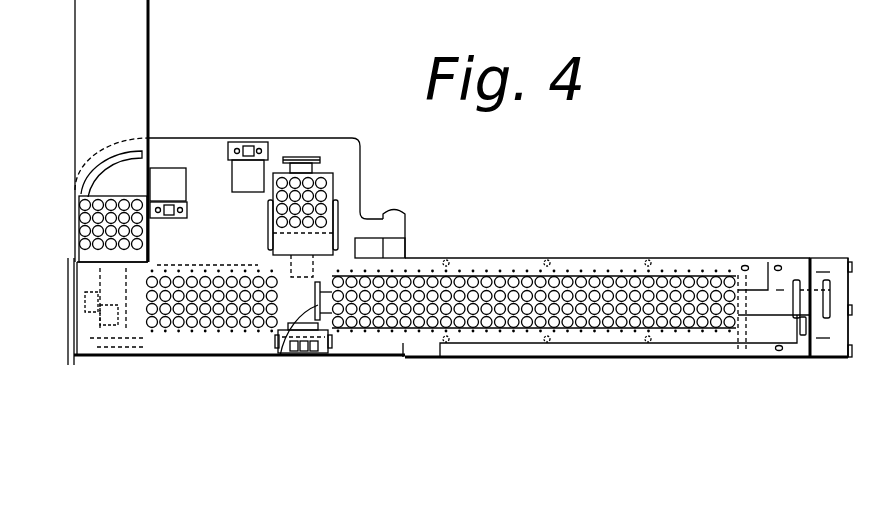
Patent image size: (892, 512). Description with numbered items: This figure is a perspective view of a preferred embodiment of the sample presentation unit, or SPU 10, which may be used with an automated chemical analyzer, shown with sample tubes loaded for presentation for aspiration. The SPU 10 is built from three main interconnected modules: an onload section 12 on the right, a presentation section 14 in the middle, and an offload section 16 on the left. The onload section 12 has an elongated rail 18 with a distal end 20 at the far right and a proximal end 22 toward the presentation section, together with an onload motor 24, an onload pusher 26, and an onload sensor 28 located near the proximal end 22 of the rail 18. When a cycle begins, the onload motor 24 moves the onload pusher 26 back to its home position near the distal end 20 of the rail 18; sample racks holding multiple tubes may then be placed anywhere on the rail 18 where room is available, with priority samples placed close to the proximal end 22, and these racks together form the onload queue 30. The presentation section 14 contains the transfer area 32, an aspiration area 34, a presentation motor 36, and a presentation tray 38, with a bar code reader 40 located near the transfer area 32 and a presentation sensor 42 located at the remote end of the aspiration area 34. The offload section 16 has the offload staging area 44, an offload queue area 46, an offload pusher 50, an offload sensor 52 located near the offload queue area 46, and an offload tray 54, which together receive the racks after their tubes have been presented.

The SPU 10 is at (625, 183).
The onload section 12 is at (588, 486).
The presentation section 14 is at (281, 486).
The offload section 16 is at (103, 486).
The elongated rail 18 is at (565, 258).
The distal end 20 is at (795, 262).
The proximal end 22 is at (480, 258).
The onload motor 24 is at (823, 335).
The onload pusher 26 is at (748, 318).
The onload sensor 28 is at (668, 273).
The onload queue 30 is at (606, 281).
The transfer area 32 is at (284, 358).
The aspiration area 34 is at (333, 147).
The presentation motor 36 is at (328, 341).
The presentation tray 38 is at (335, 229).
The bar code reader 40 is at (405, 219).
The presentation sensor 42 is at (300, 172).
The offload staging area 44 is at (178, 323).
The offload queue area 46 is at (190, 222).
The offload pusher 50 is at (100, 262).
The offload sensor 52 is at (90, 305).
The offload tray 54 is at (75, 18).